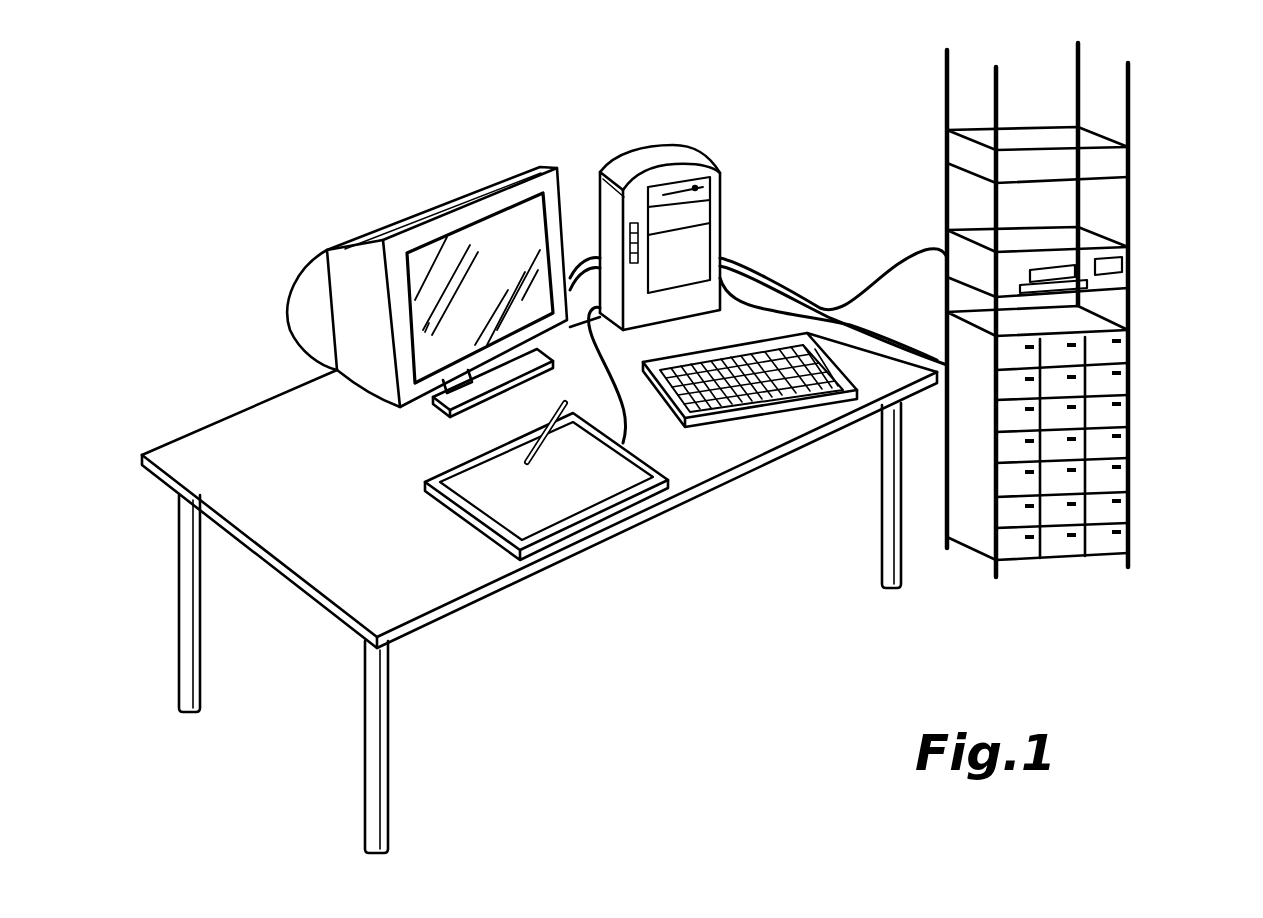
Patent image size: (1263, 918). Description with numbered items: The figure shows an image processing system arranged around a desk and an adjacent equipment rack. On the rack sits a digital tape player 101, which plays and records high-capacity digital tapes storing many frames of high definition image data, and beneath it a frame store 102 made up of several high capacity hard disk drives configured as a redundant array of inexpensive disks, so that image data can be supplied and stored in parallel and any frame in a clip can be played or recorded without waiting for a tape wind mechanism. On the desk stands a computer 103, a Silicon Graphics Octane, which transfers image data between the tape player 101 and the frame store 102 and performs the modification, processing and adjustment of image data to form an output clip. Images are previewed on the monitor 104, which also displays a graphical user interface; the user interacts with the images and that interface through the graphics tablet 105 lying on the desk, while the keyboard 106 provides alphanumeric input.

The digital tape player 101 is at (1068, 262).
The frame store 102 is at (1113, 378).
The computer 103 is at (637, 160).
The monitor 104 is at (457, 224).
The graphics tablet 105 is at (532, 500).
The keyboard 106 is at (735, 352).